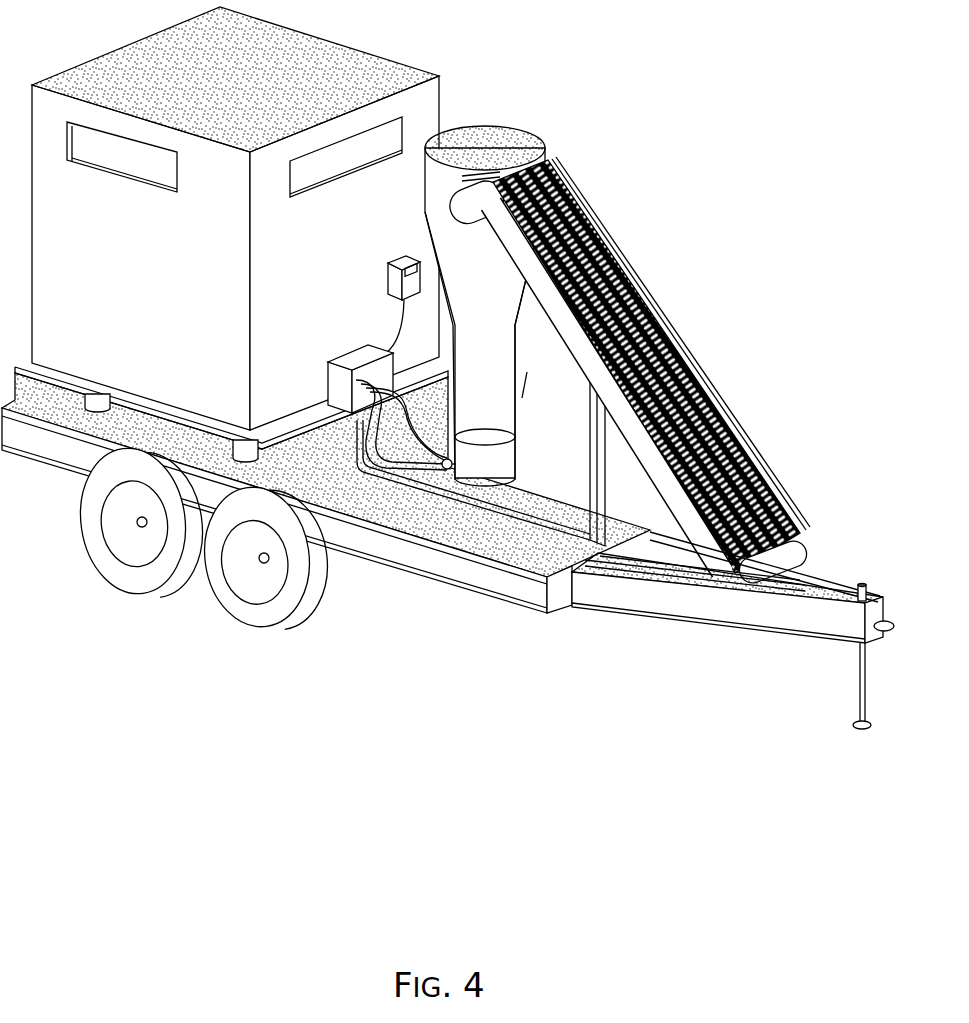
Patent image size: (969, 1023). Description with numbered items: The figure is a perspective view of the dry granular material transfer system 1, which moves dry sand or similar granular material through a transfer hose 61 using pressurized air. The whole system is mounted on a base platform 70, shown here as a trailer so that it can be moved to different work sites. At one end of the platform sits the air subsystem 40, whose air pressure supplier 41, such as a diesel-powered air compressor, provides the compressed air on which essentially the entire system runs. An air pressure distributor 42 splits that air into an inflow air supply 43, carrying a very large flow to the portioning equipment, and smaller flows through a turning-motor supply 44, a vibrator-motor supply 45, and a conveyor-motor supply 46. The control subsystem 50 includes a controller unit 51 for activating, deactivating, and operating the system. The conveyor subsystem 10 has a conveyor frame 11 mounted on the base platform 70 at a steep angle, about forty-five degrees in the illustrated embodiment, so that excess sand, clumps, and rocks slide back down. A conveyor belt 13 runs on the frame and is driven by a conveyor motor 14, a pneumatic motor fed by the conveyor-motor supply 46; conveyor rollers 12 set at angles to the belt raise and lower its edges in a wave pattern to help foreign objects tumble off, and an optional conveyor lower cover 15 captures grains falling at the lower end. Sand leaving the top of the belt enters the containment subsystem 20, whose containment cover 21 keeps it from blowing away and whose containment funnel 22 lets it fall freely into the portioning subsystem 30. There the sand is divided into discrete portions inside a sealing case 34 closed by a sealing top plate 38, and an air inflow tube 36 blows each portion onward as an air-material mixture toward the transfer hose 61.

The dry granular material transfer system 1 is at (712, 36).
The conveyor subsystem 10 is at (682, 248).
The conveyor frame 11 is at (692, 538).
The conveyor rollers 12 is at (667, 470).
The conveyor belt 13 is at (740, 453).
The conveyor motor 14 is at (458, 202).
The conveyor lower cover 15 is at (798, 546).
The containment subsystem 20 is at (472, 92).
The containment cover 21 is at (520, 130).
The containment funnel 22 is at (512, 330).
The portioning subsystem 30 is at (528, 410).
The sealing case 34 is at (515, 462).
The air inflow tube 36 is at (445, 458).
The sealing top plate 38 is at (515, 433).
The air subsystem 40 is at (384, 34).
The air pressure supplier 41 is at (165, 43).
The air pressure distributor 42 is at (386, 352).
The inflow air supply 43 is at (400, 392).
The turning-motor supply 44 is at (362, 370).
The vibrator-motor supply 45 is at (350, 366).
The conveyor-motor supply 46 is at (328, 378).
The control subsystem 50 is at (397, 244).
The controller unit 51 is at (410, 262).
The transfer hose 61 is at (525, 372).
The base platform 70 is at (798, 660).